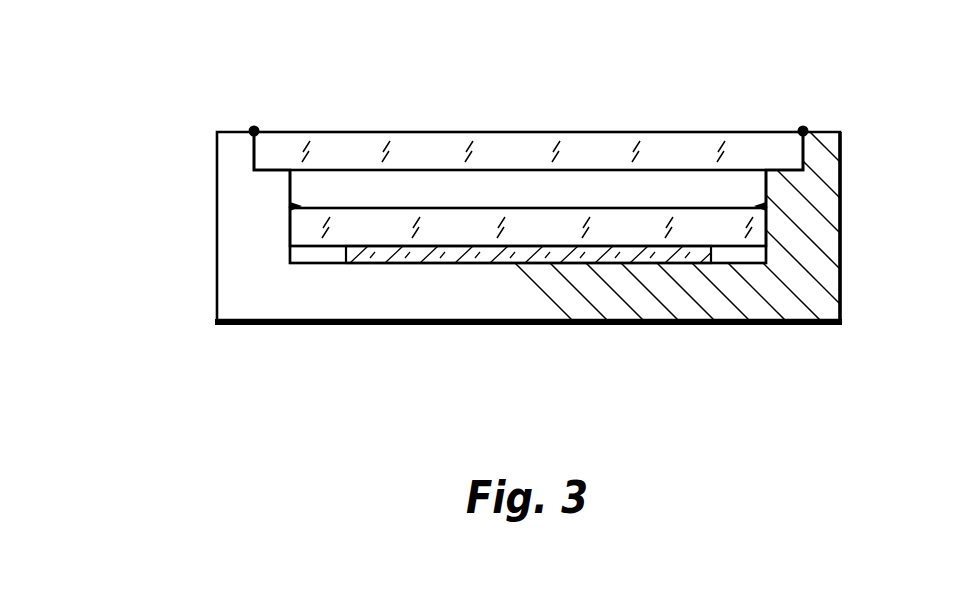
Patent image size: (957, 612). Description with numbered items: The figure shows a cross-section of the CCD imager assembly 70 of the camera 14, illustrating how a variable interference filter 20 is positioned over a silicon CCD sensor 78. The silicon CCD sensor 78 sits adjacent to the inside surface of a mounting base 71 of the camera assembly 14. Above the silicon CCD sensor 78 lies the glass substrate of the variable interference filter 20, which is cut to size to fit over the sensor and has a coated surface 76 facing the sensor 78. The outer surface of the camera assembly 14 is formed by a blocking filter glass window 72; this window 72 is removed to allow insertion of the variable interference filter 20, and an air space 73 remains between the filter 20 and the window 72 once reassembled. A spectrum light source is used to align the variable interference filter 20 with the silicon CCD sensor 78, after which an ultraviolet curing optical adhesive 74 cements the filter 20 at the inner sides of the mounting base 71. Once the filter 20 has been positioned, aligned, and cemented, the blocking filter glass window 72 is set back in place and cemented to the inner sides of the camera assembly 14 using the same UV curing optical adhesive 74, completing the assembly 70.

The sensor assembly 70 is at (129, 152).
The mounting base 71 is at (228, 237).
The blocking filter glass window 72 is at (692, 145).
The air space 73 is at (743, 193).
The ultraviolet curing optical adhesive 74 is at (256, 124).
The variable interference filter 20 is at (757, 227).
The coated surface 76 is at (737, 248).
The silicon CCD sensor 78 is at (668, 262).
The camera 14 is at (741, 330).